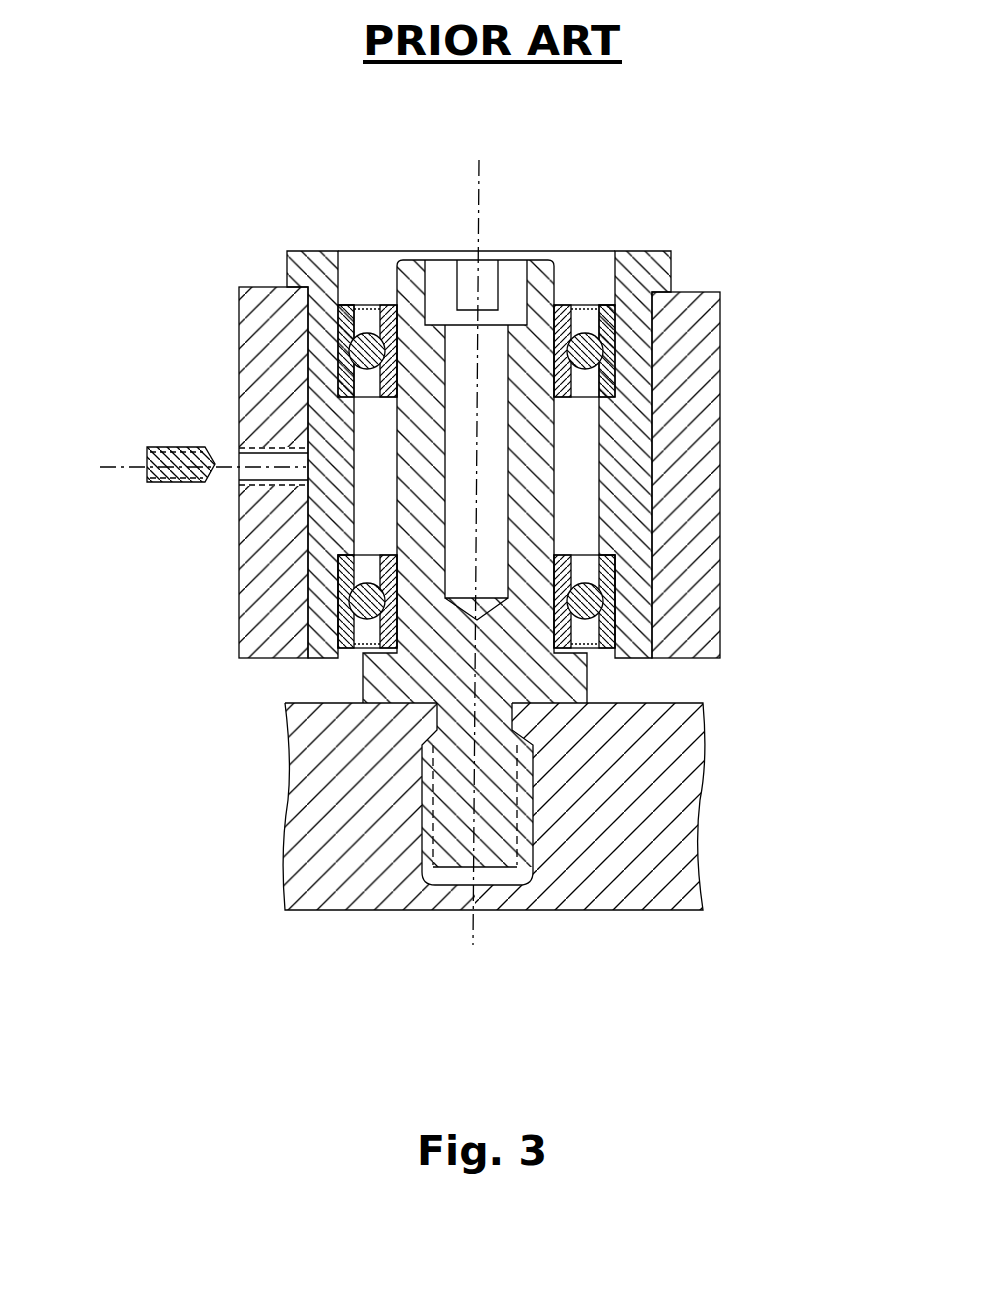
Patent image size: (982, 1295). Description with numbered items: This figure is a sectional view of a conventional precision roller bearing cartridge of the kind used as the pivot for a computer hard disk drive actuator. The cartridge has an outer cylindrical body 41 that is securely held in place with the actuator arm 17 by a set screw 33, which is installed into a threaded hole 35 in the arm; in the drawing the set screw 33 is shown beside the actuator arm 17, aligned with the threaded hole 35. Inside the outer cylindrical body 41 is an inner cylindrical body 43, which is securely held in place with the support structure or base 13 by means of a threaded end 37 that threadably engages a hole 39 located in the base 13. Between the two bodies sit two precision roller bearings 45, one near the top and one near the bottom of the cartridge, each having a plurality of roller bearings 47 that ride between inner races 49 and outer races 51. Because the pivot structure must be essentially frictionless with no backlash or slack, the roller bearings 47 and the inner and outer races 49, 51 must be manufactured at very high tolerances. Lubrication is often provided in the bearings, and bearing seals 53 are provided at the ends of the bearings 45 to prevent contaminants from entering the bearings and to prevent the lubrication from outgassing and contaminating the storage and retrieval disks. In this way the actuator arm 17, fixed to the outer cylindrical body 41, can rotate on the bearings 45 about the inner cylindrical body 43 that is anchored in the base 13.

The support structure or base 13 is at (641, 905).
The actuator arm 17 is at (720, 365).
The set screw 33 is at (181, 447).
The threaded hole 35 is at (242, 471).
The threaded end 37 is at (498, 823).
The hole 39 is at (462, 876).
The outer cylindrical body 41 is at (632, 442).
The inner cylindrical body 43 is at (532, 488).
The precision roller bearings 45 is at (606, 240).
The roller bearings 47 is at (364, 343).
The inner races 49 is at (393, 303).
The outer races 51 is at (350, 305).
The bearing seals 53 is at (370, 303).